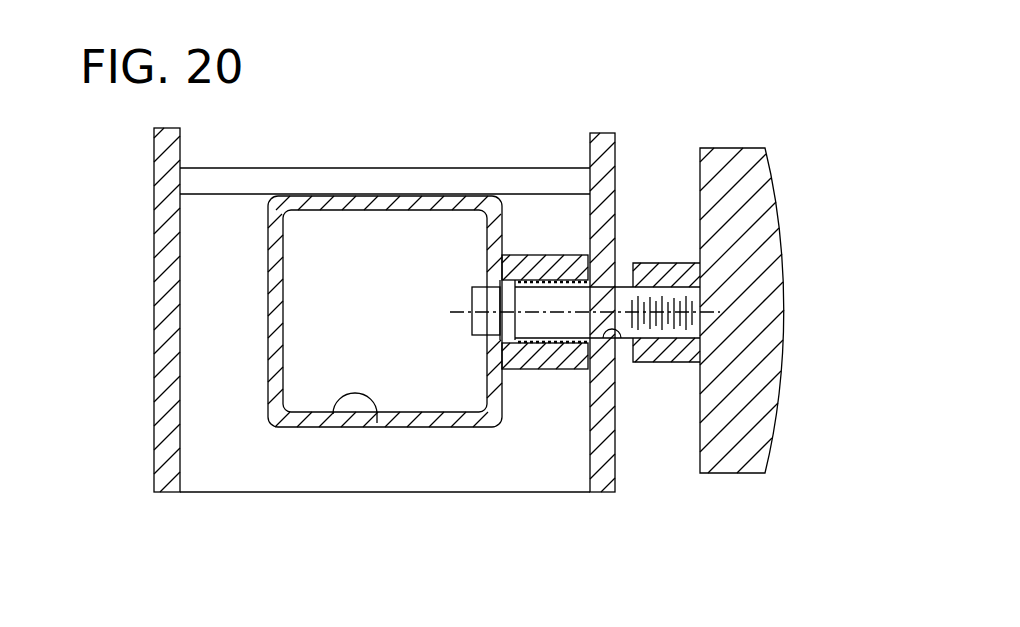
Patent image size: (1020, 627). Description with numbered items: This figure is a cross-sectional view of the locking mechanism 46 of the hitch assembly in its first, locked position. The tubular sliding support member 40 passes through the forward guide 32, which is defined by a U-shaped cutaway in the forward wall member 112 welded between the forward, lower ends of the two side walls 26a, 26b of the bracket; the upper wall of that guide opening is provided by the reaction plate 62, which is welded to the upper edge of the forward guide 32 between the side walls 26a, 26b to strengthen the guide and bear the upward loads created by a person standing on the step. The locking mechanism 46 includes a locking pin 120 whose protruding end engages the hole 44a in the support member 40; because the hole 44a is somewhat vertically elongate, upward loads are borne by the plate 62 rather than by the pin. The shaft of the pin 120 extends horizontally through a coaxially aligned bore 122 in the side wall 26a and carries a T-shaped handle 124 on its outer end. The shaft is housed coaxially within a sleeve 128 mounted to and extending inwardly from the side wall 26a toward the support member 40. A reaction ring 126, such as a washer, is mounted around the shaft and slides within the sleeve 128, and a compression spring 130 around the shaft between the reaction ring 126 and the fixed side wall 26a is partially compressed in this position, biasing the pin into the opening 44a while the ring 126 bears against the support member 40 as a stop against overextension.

The reaction plate 62 is at (292, 182).
The sliding support member 40 is at (366, 196).
The locking pin 120 is at (557, 298).
The reaction ring 126 is at (497, 296).
The hole 44a is at (495, 326).
The compression spring 130 is at (560, 360).
The sleeve 128 is at (563, 372).
The forward guide 32 is at (342, 393).
The forward wall member 112 is at (241, 460).
The side wall 26b is at (158, 372).
The side wall 26a is at (612, 456).
The locking mechanism 46 is at (692, 492).
The bore 122 is at (620, 342).
The T-shaped handle 124 is at (757, 407).